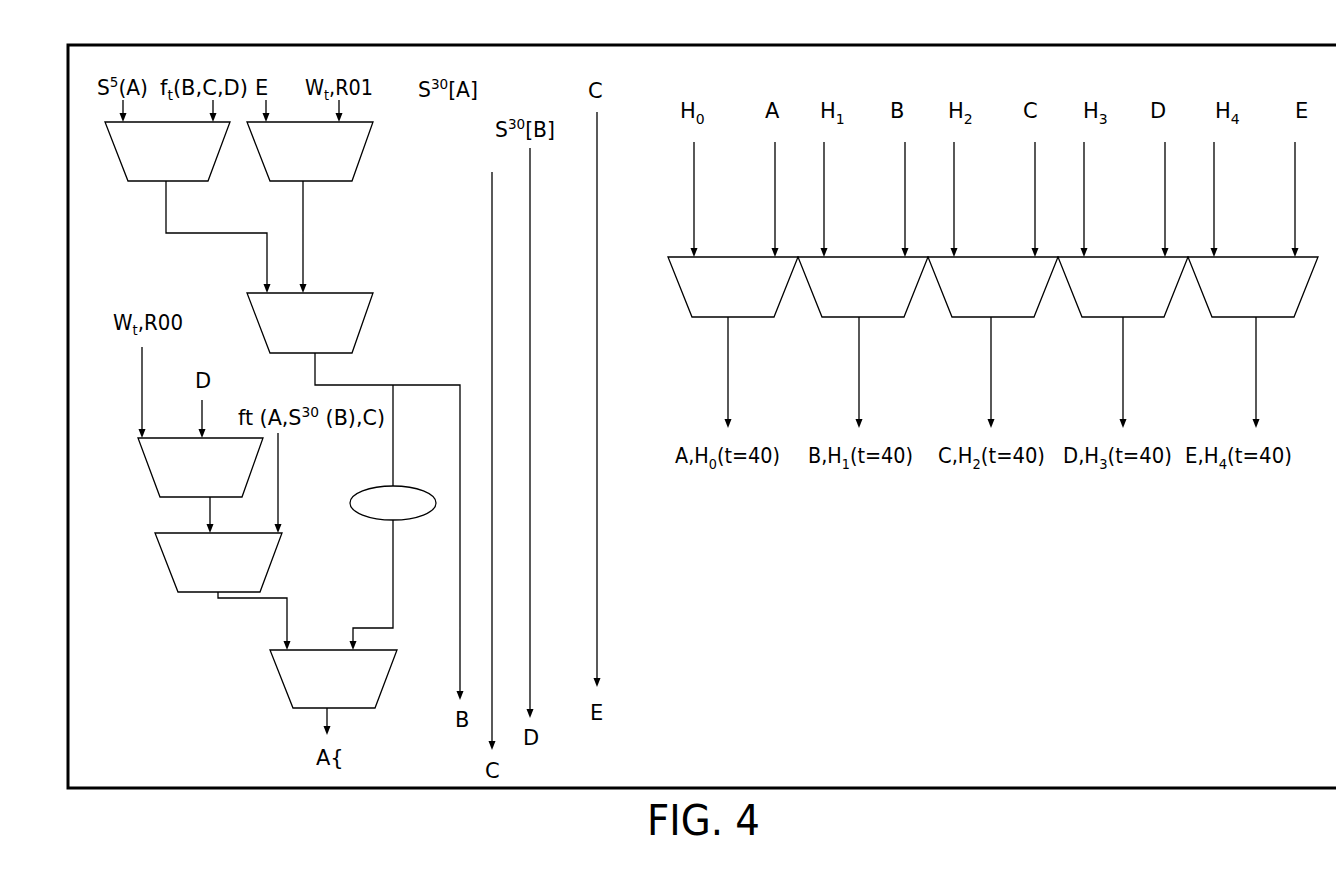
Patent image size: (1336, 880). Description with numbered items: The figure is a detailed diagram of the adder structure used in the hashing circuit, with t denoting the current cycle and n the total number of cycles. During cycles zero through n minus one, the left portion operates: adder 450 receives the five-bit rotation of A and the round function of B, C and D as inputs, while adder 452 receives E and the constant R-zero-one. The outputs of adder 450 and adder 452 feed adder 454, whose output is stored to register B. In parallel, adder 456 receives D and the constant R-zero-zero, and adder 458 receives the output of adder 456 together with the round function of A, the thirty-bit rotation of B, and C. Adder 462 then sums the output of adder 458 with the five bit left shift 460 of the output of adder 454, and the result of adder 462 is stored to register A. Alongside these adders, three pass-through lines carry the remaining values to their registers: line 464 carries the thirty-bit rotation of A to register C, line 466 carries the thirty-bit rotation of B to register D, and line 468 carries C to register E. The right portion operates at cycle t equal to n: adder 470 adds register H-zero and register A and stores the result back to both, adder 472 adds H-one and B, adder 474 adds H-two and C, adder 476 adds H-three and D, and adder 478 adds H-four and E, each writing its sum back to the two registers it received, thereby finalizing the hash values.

The adder 450 is at (115, 153).
The adder 452 is at (363, 155).
The adder 454 is at (370, 308).
The adder 456 is at (148, 477).
The adder 458 is at (170, 580).
The 5 bit left shift 460 is at (397, 521).
The adder 462 is at (277, 678).
The S30[A] bus line 464 is at (492, 277).
The S30[B] bus line 466 is at (530, 423).
The C bus line 468 is at (597, 380).
The adder 470 is at (717, 255).
The adder 472 is at (847, 255).
The adder 474 is at (977, 255).
The adder 476 is at (1107, 255).
The adder 478 is at (1237, 255).